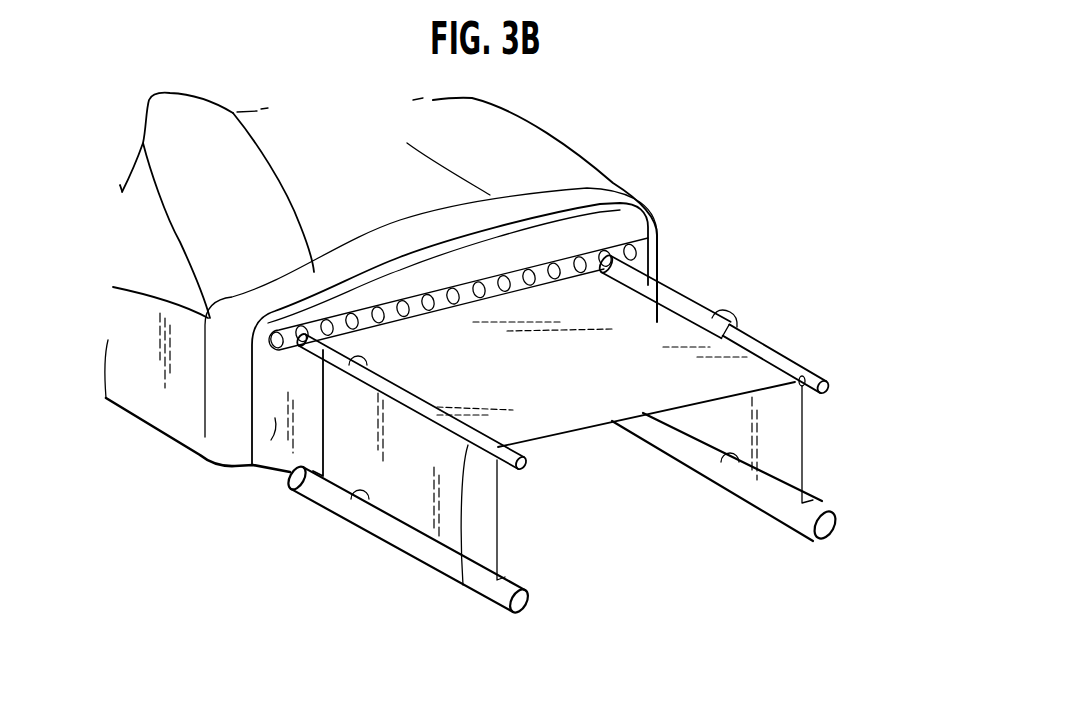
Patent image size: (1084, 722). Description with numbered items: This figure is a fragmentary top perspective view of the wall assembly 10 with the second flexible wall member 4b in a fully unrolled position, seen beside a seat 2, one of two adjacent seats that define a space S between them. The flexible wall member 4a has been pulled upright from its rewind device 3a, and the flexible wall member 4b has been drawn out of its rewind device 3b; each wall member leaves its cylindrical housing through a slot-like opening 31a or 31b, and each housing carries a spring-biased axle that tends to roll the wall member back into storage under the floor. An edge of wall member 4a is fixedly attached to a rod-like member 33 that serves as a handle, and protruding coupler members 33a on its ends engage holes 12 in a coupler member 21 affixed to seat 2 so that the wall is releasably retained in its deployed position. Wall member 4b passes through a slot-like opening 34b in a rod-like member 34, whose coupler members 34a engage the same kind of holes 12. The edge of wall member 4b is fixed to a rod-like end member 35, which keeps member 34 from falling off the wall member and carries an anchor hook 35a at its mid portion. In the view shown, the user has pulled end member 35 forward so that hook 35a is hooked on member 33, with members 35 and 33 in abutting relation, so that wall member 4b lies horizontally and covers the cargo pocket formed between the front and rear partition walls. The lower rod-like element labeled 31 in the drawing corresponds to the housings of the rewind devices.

The seat 2 is at (422, 316).
The coupler member 21 is at (197, 389).
The holes 12 is at (488, 247).
The wall assembly 10 is at (566, 455).
The rewind device 3a is at (715, 443).
The rewind device 3b is at (410, 485).
The lower rod 31 is at (546, 514).
The slot-like opening 31a is at (689, 484).
The slot-like opening 31b is at (311, 528).
The rod-like member 34 is at (403, 483).
The coupler members 34a is at (542, 503).
The slot-like opening 34b is at (294, 439).
The end member 35 is at (706, 282).
The anchor hook 35a is at (763, 276).
The rod-like member 33 is at (794, 331).
The coupler members 33a is at (840, 348).
The flexible wall member 4a is at (831, 439).
The flexible wall member 4b is at (616, 455).
The space S is at (623, 533).